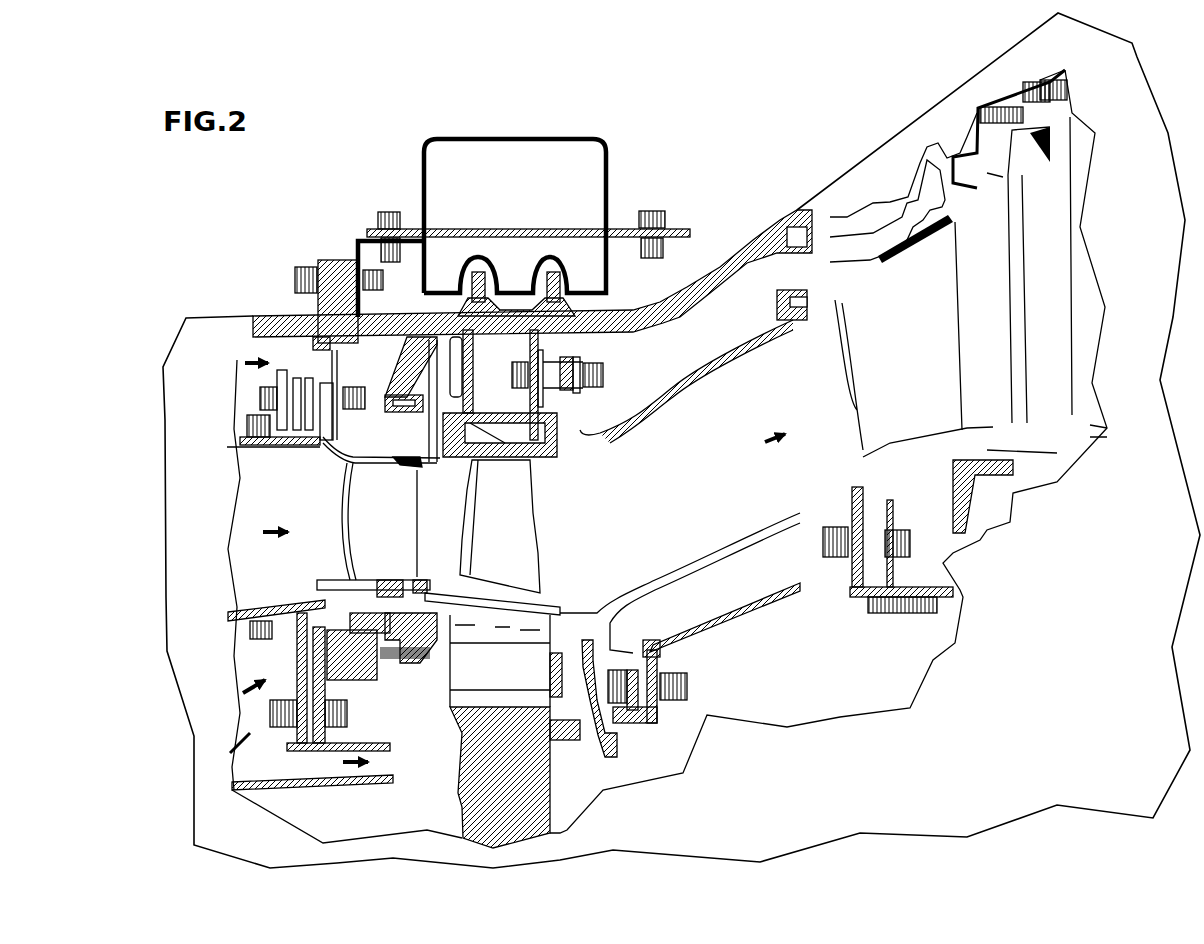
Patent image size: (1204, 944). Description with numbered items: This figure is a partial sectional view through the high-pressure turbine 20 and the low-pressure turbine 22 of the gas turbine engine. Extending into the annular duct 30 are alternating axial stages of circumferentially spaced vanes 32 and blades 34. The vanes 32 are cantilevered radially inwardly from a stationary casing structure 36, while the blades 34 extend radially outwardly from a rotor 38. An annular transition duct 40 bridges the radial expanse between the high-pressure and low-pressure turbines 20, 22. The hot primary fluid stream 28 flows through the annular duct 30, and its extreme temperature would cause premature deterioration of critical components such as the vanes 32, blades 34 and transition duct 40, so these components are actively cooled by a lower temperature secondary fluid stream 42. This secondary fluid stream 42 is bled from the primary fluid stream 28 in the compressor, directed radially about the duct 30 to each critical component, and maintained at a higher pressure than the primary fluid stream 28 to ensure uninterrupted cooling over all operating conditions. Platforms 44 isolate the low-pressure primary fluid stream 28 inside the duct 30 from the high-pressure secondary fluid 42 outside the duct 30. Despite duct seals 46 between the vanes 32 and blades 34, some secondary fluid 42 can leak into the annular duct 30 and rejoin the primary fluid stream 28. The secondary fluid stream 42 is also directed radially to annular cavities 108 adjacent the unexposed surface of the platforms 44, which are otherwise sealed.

The high-pressure turbine 20 is at (348, 205).
The low-pressure turbine 22 is at (836, 645).
The primary fluid stream 28 is at (287, 527).
The annular duct 30 is at (455, 522).
The vanes 32 is at (340, 502).
The blades 34 is at (545, 511).
The stationary casing structure 36 is at (260, 317).
The rotor 38 is at (518, 784).
The annular transition duct 40 is at (727, 477).
The secondary fluid stream 42 is at (258, 360).
The platforms 44 is at (683, 390).
The duct seals 46 is at (568, 609).
The annular cavities 108 is at (730, 343).